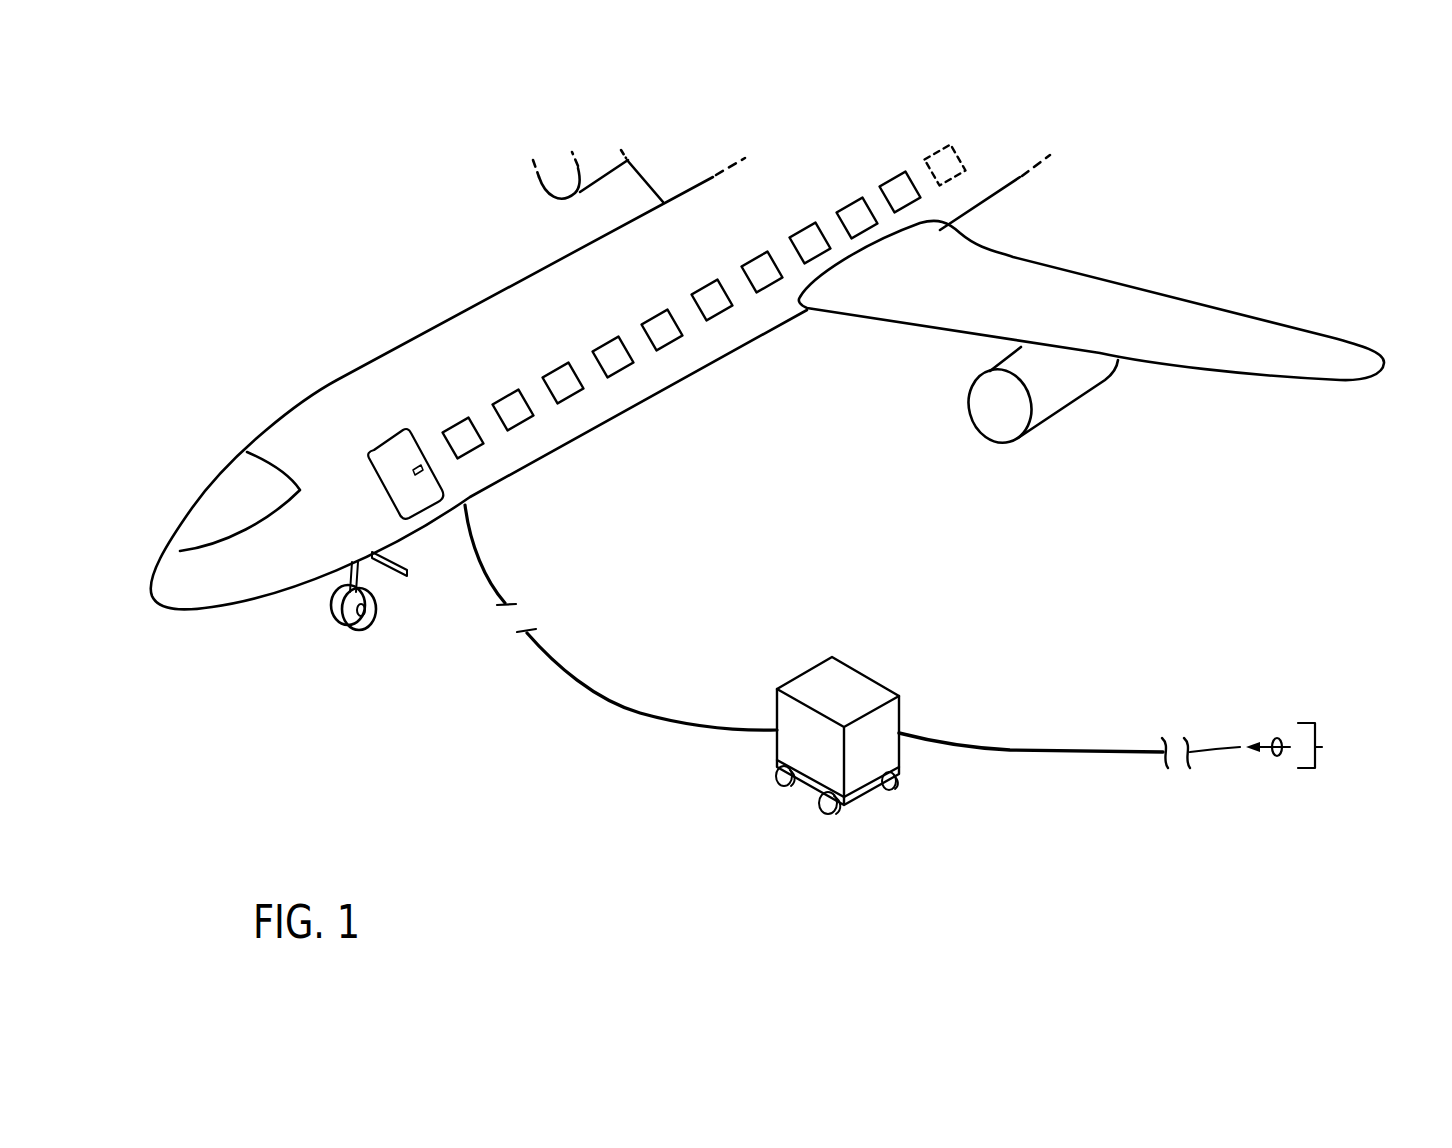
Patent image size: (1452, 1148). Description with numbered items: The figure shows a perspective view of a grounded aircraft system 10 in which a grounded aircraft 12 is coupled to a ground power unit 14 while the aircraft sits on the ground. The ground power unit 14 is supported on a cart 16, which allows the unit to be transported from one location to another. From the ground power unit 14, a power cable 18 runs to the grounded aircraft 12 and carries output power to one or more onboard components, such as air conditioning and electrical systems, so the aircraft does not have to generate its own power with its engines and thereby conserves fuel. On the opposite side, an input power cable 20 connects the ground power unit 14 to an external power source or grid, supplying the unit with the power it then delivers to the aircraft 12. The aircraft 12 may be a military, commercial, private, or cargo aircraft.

The grounded aircraft system 10 is at (336, 247).
The grounded aircraft 12 is at (335, 377).
The ground power unit 14 is at (868, 678).
The cart 16 is at (773, 760).
The power cable 18 is at (630, 710).
The input power cable 20 is at (1070, 753).